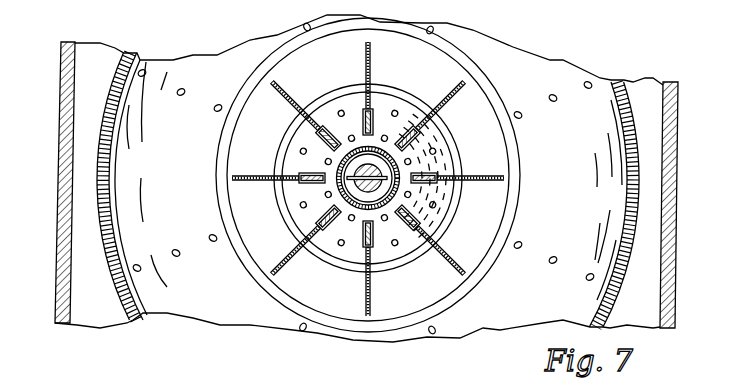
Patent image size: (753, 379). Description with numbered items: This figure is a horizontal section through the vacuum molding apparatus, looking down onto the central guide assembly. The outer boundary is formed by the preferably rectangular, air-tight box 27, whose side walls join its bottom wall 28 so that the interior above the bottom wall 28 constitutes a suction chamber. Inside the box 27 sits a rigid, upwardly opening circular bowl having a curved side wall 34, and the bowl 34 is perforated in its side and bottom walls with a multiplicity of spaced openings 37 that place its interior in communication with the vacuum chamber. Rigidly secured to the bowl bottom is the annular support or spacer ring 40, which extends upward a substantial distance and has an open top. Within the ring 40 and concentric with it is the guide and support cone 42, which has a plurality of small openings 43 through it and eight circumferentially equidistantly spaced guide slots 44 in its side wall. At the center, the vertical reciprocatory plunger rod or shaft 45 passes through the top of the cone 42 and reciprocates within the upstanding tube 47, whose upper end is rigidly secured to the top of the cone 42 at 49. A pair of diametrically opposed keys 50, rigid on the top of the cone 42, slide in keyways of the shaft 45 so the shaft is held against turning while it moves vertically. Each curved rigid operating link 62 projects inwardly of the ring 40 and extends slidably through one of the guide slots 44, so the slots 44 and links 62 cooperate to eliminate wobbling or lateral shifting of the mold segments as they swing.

The box 27 is at (60, 180).
The bottom wall 28 is at (640, 100).
The curved side wall 34 is at (94, 252).
The spaced openings 37 is at (215, 109).
The annular support or spacer ring 40 is at (526, 159).
The guide and support cone 42 is at (440, 152).
The small openings 43 is at (399, 112).
The guide slots 44 is at (318, 130).
The plunger rod or shaft 45 is at (360, 201).
The upstanding tube 47 is at (338, 170).
The securing point of tube to cone 49 is at (350, 190).
The keys 50 is at (348, 180).
The curved rigid operating link 62 is at (290, 90).